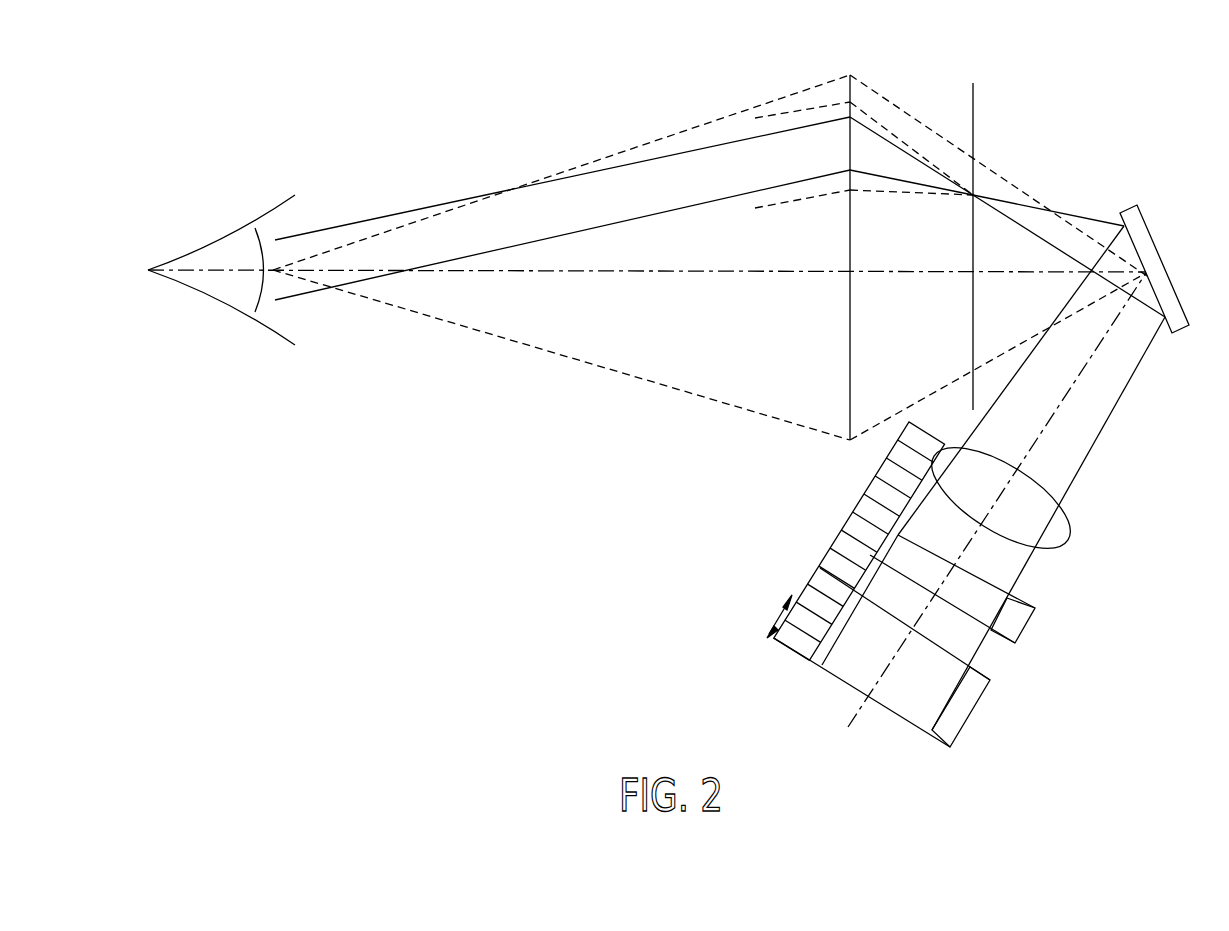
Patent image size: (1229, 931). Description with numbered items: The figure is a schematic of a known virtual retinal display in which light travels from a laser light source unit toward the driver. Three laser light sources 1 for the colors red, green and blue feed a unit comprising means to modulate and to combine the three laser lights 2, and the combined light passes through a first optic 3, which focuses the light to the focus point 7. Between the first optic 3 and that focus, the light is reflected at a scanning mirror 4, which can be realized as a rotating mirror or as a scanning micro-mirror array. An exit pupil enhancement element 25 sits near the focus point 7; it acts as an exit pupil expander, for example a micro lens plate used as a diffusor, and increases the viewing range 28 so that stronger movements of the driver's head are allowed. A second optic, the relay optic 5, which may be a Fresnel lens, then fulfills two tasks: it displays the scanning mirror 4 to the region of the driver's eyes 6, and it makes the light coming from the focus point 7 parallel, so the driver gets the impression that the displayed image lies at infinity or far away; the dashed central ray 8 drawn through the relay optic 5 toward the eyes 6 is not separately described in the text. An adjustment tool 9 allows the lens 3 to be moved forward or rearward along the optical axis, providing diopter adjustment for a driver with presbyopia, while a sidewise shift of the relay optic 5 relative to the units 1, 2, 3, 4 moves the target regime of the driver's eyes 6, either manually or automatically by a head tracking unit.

The laser light sources 1 is at (962, 708).
The means to modulate and to combine the three laser lights 2 is at (1025, 620).
The first optic 3 is at (1065, 528).
The scanning mirror 4 is at (1140, 230).
The relay optic 5 is at (855, 83).
The driver's eyes 6 is at (228, 258).
The focus point 7 is at (972, 204).
The chief ray 8 is at (670, 132).
The adjustment tool 9 is at (855, 525).
The exit pupil enhancement element 25 is at (978, 113).
The viewing range 28 is at (793, 112).